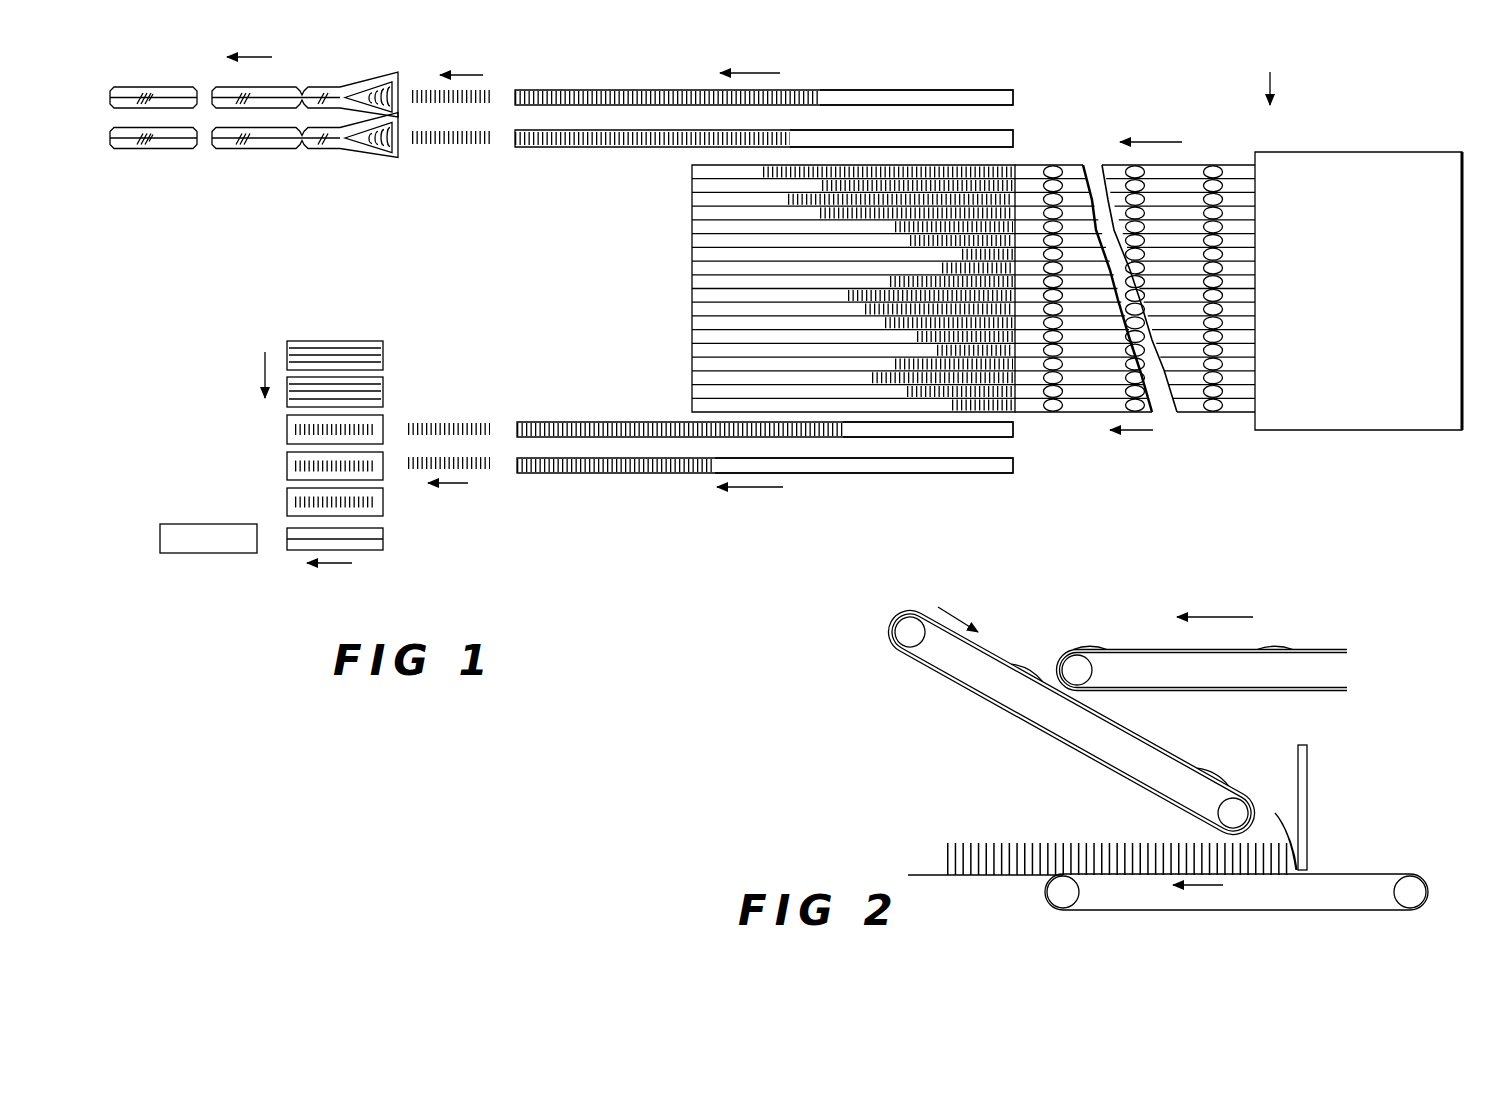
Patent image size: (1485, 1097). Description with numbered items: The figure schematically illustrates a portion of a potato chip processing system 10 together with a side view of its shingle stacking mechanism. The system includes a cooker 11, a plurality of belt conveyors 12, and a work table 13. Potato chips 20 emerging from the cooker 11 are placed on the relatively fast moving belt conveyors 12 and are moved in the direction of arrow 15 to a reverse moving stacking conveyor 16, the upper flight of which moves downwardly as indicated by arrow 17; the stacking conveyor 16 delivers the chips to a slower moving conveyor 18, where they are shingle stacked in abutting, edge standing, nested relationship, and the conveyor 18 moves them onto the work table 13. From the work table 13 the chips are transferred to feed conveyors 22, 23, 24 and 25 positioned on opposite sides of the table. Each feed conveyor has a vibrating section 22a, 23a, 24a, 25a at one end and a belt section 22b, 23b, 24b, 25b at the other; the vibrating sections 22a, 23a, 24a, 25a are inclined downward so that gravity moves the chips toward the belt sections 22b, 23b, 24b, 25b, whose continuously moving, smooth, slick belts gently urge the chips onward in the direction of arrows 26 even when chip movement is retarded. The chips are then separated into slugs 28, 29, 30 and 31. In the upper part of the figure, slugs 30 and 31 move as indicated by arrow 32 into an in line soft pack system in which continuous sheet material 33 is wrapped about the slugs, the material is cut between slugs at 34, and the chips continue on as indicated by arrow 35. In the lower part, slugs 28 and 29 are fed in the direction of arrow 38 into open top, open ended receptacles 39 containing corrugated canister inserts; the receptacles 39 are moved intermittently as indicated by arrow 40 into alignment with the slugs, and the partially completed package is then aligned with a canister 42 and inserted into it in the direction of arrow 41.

In FIG. 1, the potato chip processing system 10 is at (1269, 76).
In FIG. 1, the cooker 11 is at (1373, 433).
In FIG. 1, the belt conveyors 12 is at (1236, 392).
In FIG. 2, the belt conveyors 12 is at (1217, 657).
In FIG. 1, the work table 13 is at (700, 298).
In FIG. 2, the work table 13 is at (931, 873).
In FIG. 1, the arrow 15 is at (1165, 142).
In FIG. 2, the arrow 15 is at (1227, 617).
In FIG. 2, the stacking conveyor 16 is at (975, 655).
In FIG. 2, the arrow 17 is at (955, 613).
In FIG. 2, the slower moving conveyor 18 is at (1360, 874).
In FIG. 1, the potato chips 20 is at (672, 147).
In FIG. 1, the feed conveyor 22 is at (792, 486).
In FIG. 1, the vibrating section 22a is at (885, 475).
In FIG. 1, the belt section 22b is at (571, 475).
In FIG. 1, the feed conveyor 23 is at (793, 449).
In FIG. 1, the vibrating section 23a is at (955, 437).
In FIG. 1, the belt section 23b is at (573, 422).
In FIG. 1, the feed conveyor 24 is at (790, 146).
In FIG. 1, the vibrating section 24a is at (948, 130).
In FIG. 1, the belt section 24b is at (572, 147).
In FIG. 1, the feed conveyor 25 is at (794, 70).
In FIG. 1, the vibrating section 25a is at (985, 90).
In FIG. 1, the belt section 25b is at (578, 90).
In FIG. 1, the arrows 26 is at (780, 73).
In FIG. 1, the slug of potato chips 28 is at (483, 472).
In FIG. 1, the slug of potato chips 29 is at (447, 424).
In FIG. 1, the slug of potato chips 30 is at (462, 146).
In FIG. 1, the slug of potato chips 31 is at (492, 90).
In FIG. 1, the arrow 32 is at (483, 75).
In FIG. 1, the continuous sheet material 33 is at (396, 72).
In FIG. 1, the cut location 34 is at (204, 82).
In FIG. 1, the arrow 35 is at (272, 57).
In FIG. 1, the arrow 38 is at (448, 483).
In FIG. 1, the receptacles 39 is at (353, 341).
In FIG. 1, the arrow 40 is at (262, 365).
In FIG. 1, the arrow 41 is at (337, 563).
In FIG. 1, the canister 42 is at (213, 547).